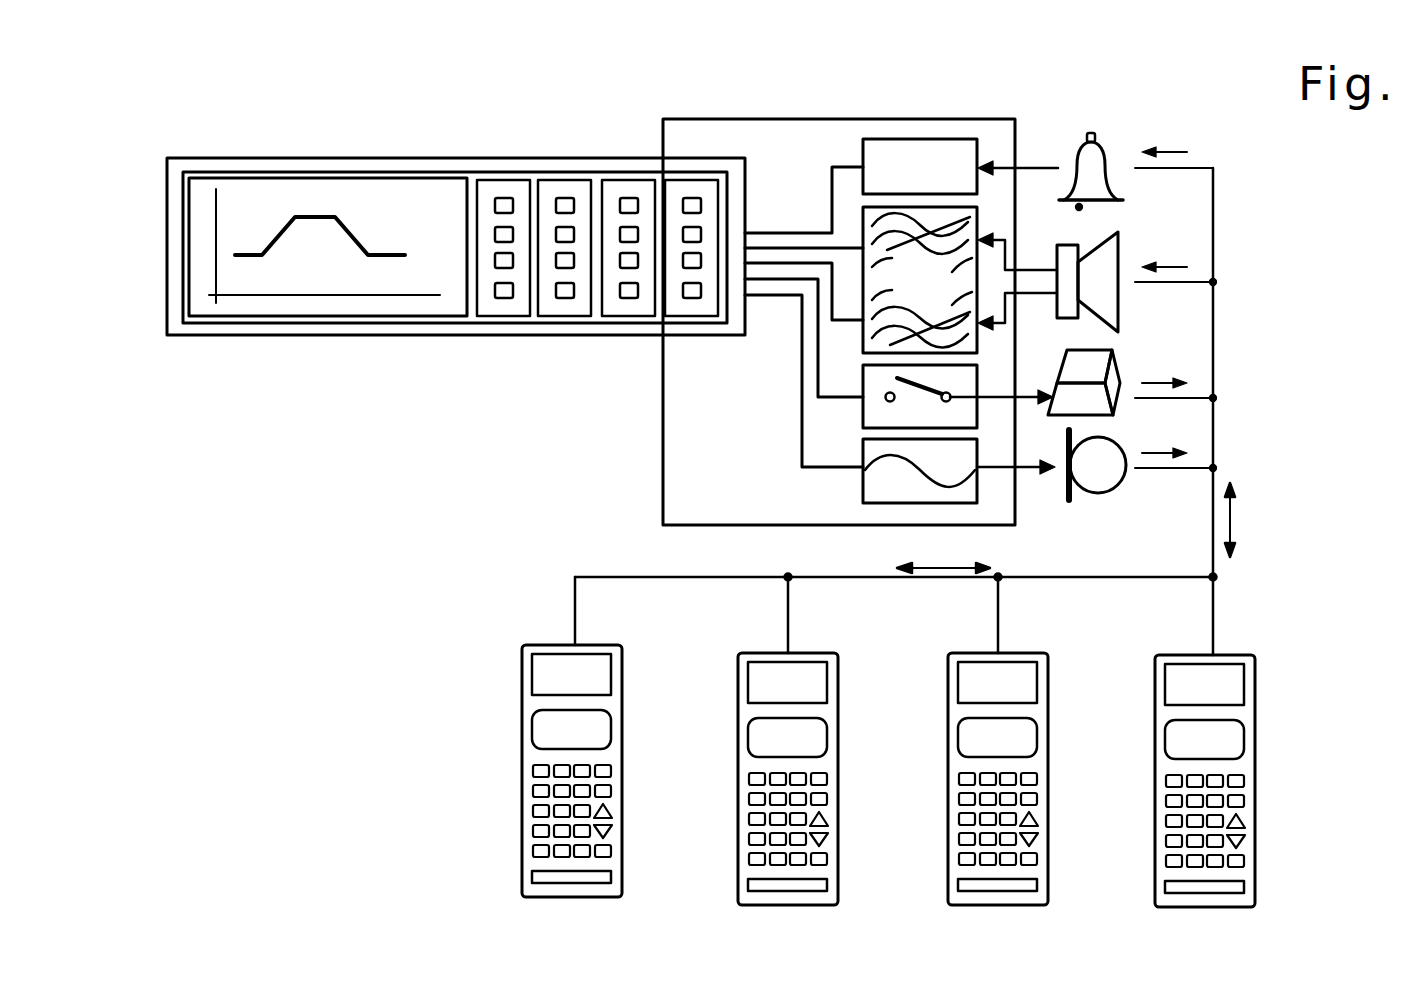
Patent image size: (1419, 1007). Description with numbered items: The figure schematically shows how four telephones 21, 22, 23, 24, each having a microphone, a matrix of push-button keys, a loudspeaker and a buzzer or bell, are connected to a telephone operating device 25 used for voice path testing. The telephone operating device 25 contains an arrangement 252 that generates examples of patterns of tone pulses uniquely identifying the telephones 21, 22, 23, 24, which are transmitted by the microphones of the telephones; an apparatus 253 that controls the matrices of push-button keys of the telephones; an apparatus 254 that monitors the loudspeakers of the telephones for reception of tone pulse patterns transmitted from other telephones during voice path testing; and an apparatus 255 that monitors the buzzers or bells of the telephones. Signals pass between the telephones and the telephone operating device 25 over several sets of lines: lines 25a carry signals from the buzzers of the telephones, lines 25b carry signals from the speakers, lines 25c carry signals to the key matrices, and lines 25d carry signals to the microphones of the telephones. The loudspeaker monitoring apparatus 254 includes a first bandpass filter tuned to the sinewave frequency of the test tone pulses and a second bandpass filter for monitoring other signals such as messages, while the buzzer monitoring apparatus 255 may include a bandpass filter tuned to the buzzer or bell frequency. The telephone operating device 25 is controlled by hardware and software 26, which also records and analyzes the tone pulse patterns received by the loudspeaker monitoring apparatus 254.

The telephone 21 is at (522, 795).
The telephone 22 is at (738, 806).
The telephone 23 is at (948, 806).
The telephone 24 is at (1155, 798).
The telephone operating device 25 is at (815, 119).
The lines 25a is at (1187, 168).
The lines 25b is at (1175, 282).
The lines 25c is at (1185, 398).
The lines 25d is at (1175, 468).
The arrangement for generating patterns of tone pulses 252 is at (862, 488).
The apparatus for controlling the matrices of push button keys 253 is at (862, 421).
The loudspeaker monitoring apparatus 254 is at (940, 295).
The buzzer monitoring apparatus 255 is at (945, 184).
The hardware and software 26 is at (473, 158).